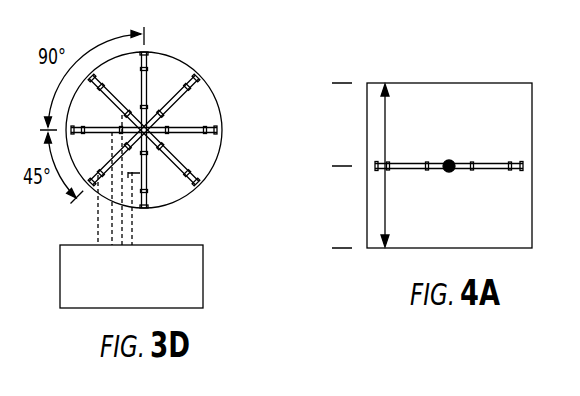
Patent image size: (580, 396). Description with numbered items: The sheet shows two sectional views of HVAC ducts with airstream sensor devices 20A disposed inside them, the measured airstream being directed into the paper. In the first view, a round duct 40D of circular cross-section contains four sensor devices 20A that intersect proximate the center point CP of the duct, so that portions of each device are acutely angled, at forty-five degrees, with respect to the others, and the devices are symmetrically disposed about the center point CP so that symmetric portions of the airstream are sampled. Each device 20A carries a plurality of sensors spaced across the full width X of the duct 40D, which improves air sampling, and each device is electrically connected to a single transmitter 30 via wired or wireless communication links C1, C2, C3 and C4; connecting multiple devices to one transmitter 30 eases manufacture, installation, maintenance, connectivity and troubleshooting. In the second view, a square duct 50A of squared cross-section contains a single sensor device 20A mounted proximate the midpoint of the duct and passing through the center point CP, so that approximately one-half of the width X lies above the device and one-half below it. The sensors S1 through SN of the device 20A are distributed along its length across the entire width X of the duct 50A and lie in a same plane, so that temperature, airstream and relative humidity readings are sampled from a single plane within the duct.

In FIG. 3D, the round duct 40D is at (172, 58).
In FIG. 3D, the airstream sensor device 20A is at (182, 161).
In FIG. 3D, the communication link C1 is at (97, 220).
In FIG. 3D, the communication link C2 is at (111, 203).
In FIG. 3D, the communication link C3 is at (133, 222).
In FIG. 3D, the communication link C4 is at (122, 205).
In FIG. 3D, the transmitter 30 is at (90, 273).
In FIG. 4A, the square duct 50A is at (440, 83).
In FIG. 4A, the duct width X is at (386, 143).
In FIG. 4A, the sensor S1 is at (390, 176).
In FIG. 4A, the sensor SN is at (512, 156).
In FIG. 4A, the center point CP is at (451, 176).